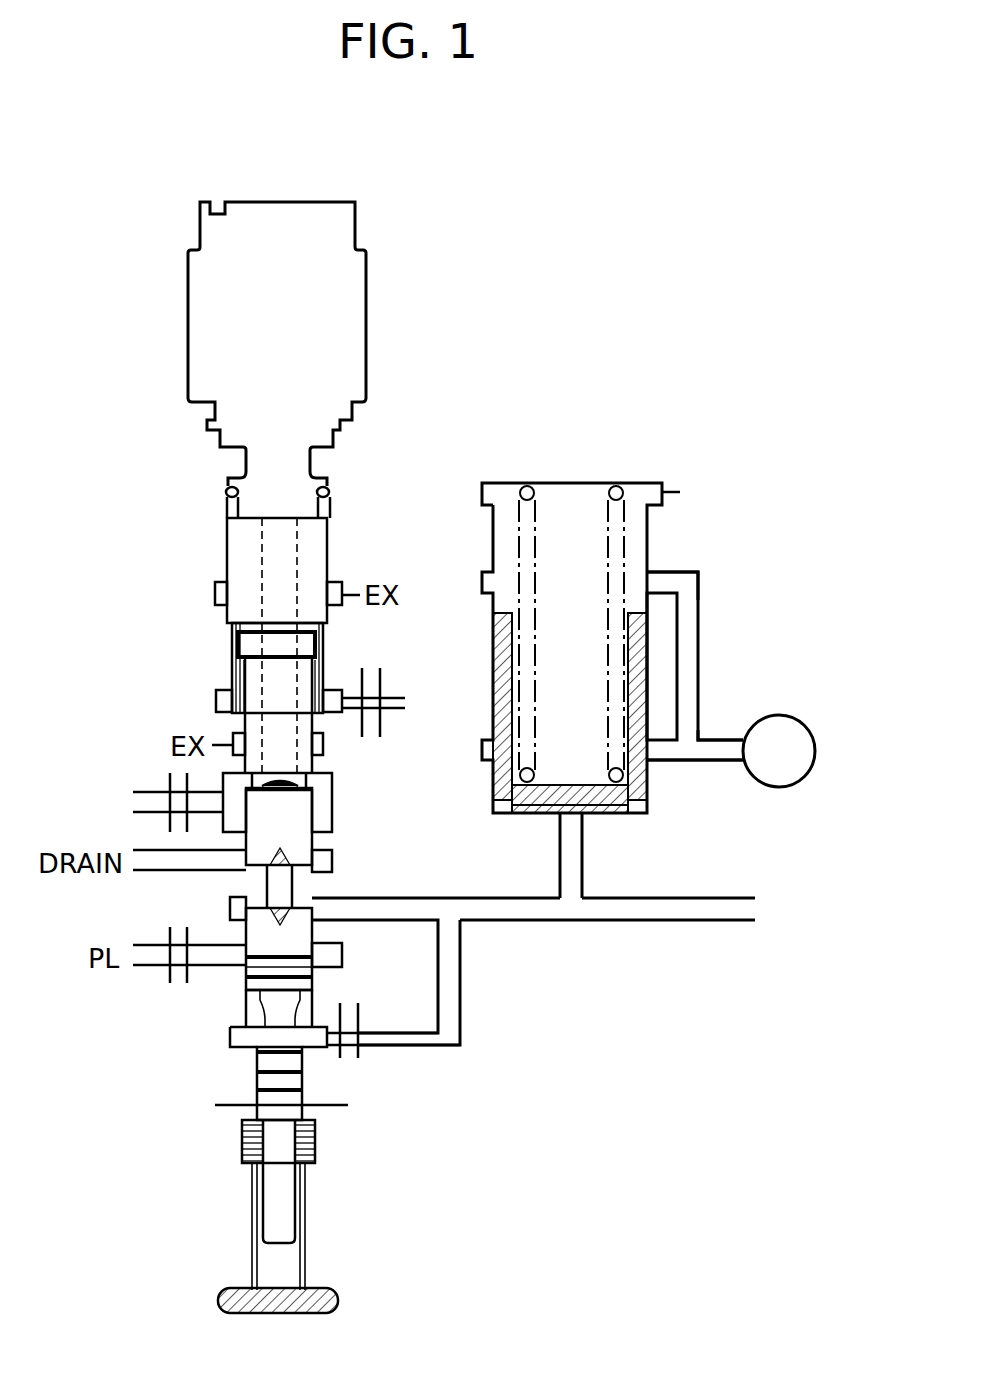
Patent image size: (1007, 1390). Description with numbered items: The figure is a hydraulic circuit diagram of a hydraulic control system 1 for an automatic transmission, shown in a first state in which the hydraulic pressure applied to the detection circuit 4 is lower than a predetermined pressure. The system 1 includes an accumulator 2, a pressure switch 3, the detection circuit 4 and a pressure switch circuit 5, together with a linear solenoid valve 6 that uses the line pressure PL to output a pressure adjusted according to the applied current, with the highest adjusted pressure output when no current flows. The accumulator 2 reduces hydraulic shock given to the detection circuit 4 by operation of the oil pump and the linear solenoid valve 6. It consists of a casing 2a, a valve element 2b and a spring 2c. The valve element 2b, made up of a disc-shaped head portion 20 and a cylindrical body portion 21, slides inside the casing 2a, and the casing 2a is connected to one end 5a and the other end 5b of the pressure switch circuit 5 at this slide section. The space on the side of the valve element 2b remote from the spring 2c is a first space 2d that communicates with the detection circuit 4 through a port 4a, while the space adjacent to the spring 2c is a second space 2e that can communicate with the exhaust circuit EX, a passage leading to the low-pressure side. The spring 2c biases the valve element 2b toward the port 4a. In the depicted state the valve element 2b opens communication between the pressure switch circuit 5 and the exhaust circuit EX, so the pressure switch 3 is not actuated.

The hydraulic control system 1 is at (539, 169).
The accumulator 2 is at (571, 479).
The casing 2a is at (493, 527).
The valve element 2b is at (496, 800).
The spring 2c is at (623, 550).
The first space 2d is at (507, 815).
The second space 2e is at (557, 498).
The pressure switch 3 is at (815, 747).
The detection circuit 4 is at (612, 927).
The port 4a is at (583, 873).
The pressure switch circuit 5 is at (701, 668).
The one end of the pressure switch circuit 5a is at (657, 763).
The other end of the pressure switch circuit 5b is at (662, 572).
The linear solenoid valve 6 is at (185, 310).
The head portion 20 is at (601, 815).
The body portion 21 is at (493, 665).